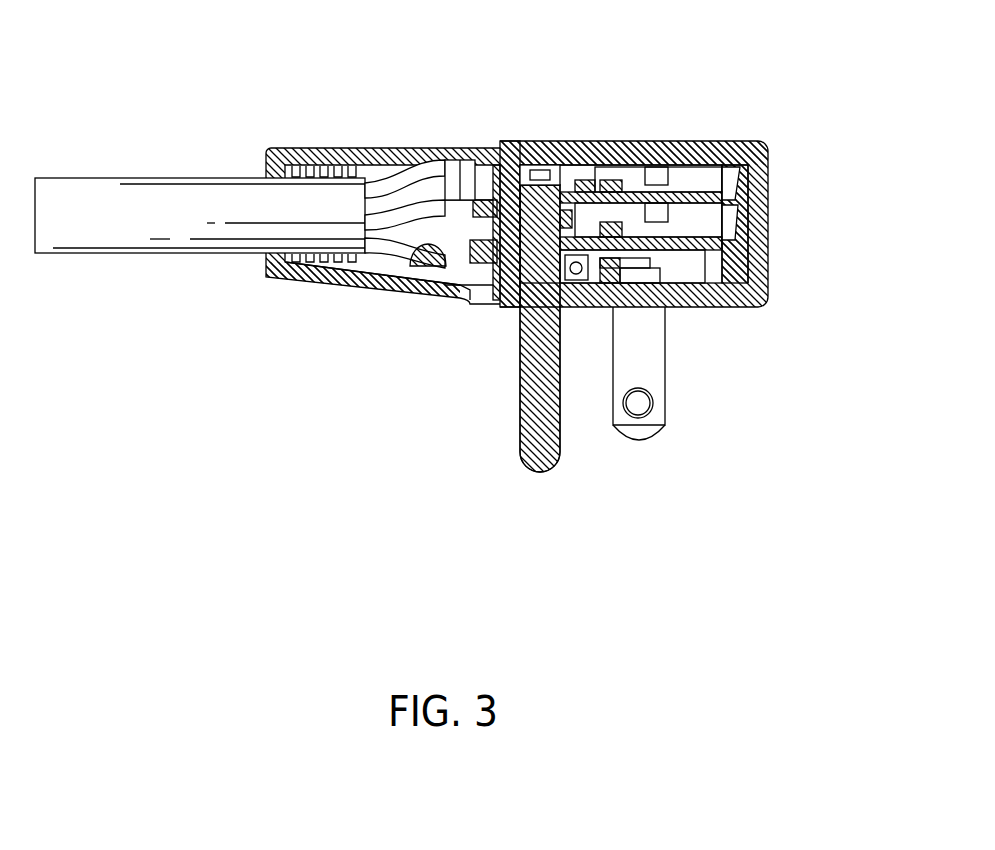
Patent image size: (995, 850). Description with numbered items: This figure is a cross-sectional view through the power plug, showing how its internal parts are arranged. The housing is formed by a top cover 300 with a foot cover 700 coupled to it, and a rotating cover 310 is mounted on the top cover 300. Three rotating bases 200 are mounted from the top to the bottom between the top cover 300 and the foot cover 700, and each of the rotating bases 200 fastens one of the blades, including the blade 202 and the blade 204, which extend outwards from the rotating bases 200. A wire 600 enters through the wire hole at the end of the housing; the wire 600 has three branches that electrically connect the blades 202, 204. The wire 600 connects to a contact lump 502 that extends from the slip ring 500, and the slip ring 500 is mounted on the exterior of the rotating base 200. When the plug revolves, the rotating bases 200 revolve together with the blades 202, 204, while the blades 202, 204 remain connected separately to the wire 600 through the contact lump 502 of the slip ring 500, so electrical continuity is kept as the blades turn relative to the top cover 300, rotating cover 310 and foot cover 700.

The rotating base 200 is at (742, 188).
The blade 202 is at (532, 425).
The blade 204 is at (645, 432).
The top cover 300 is at (353, 148).
The rotating cover 310 is at (650, 148).
The slip ring 500 is at (512, 186).
The contact lump 502 is at (458, 170).
The wire 600 is at (146, 177).
The foot cover 700 is at (333, 282).